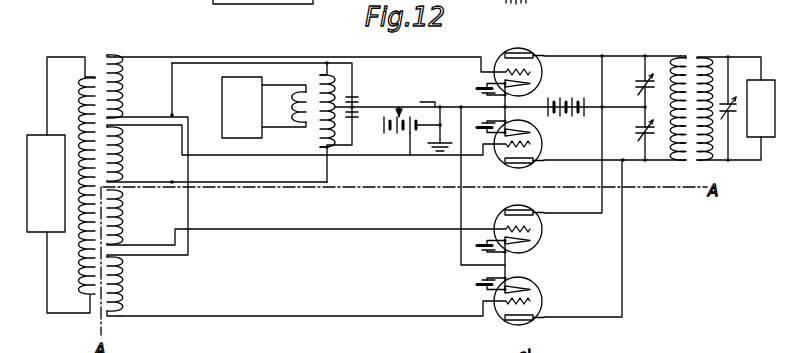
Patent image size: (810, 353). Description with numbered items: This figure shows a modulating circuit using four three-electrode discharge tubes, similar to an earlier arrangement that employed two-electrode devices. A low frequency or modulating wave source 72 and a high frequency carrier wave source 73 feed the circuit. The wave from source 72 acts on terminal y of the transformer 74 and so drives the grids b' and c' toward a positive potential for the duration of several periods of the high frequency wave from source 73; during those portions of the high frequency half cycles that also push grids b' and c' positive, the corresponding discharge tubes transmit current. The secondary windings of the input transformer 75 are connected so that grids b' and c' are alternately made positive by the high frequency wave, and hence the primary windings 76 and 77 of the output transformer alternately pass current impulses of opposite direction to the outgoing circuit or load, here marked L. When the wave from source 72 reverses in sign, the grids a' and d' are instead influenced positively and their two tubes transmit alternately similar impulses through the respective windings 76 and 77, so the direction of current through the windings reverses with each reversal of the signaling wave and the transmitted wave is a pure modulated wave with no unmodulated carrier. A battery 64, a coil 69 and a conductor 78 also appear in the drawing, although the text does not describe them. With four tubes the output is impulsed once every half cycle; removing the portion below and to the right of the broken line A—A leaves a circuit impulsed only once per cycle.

The input transformer 75 is at (98, 68).
The high frequency carrier wave source 73 is at (58, 185).
The low frequency or modulating wave source 72 is at (264, 107).
The transformer 74 is at (318, 77).
The battery 64 is at (412, 144).
The coil 69 is at (507, 1).
The primary winding of the output transformer 76 is at (710, 110).
The primary winding of the output transformer 77 is at (681, 152).
The conductor 78 is at (454, 348).
The grid a' is at (520, 90).
The grid b' is at (521, 143).
The grid c' is at (520, 247).
The grid d' is at (521, 300).
The load / line L is at (761, 108).